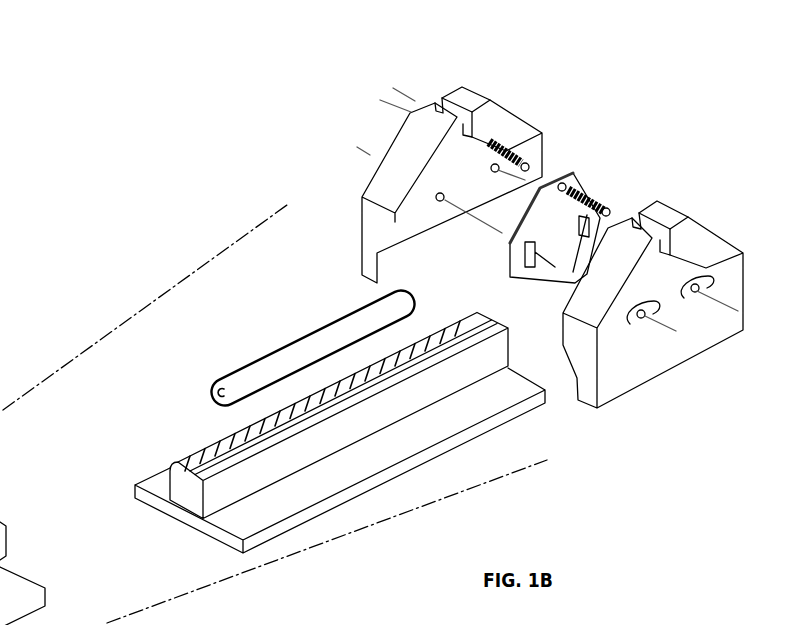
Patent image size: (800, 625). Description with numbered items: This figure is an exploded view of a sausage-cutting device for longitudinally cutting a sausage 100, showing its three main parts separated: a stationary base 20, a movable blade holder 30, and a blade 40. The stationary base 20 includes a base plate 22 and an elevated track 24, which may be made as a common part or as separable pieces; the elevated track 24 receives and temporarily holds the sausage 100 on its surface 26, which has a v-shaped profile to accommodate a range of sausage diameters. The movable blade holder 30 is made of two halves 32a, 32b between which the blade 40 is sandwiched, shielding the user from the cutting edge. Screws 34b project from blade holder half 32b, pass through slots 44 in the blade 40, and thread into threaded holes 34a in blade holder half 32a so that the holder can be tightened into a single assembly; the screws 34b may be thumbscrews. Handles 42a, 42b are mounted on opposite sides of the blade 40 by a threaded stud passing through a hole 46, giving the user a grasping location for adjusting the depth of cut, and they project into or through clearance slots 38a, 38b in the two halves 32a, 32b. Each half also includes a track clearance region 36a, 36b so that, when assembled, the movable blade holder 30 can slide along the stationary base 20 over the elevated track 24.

The stationary base 20 is at (298, 456).
The base plate 22 is at (135, 489).
The elevated track 24 is at (170, 485).
The v-shaped surface 26 is at (210, 450).
The movable blade holder 30 is at (505, 231).
The blade holder half 32a is at (473, 92).
The blade holder half 32b is at (663, 202).
The threaded holes 34a is at (440, 195).
The screws 34b is at (697, 293).
The track clearance region 36a is at (417, 168).
The track clearance region 36b is at (648, 306).
The clearance slot 38a is at (436, 100).
The clearance slot 38b is at (672, 243).
The blade 40 is at (549, 203).
The handle 42a is at (512, 152).
The handle 42b is at (603, 203).
The slots 44 is at (585, 230).
The hole 46 is at (562, 186).
The sausage 100 is at (212, 392).